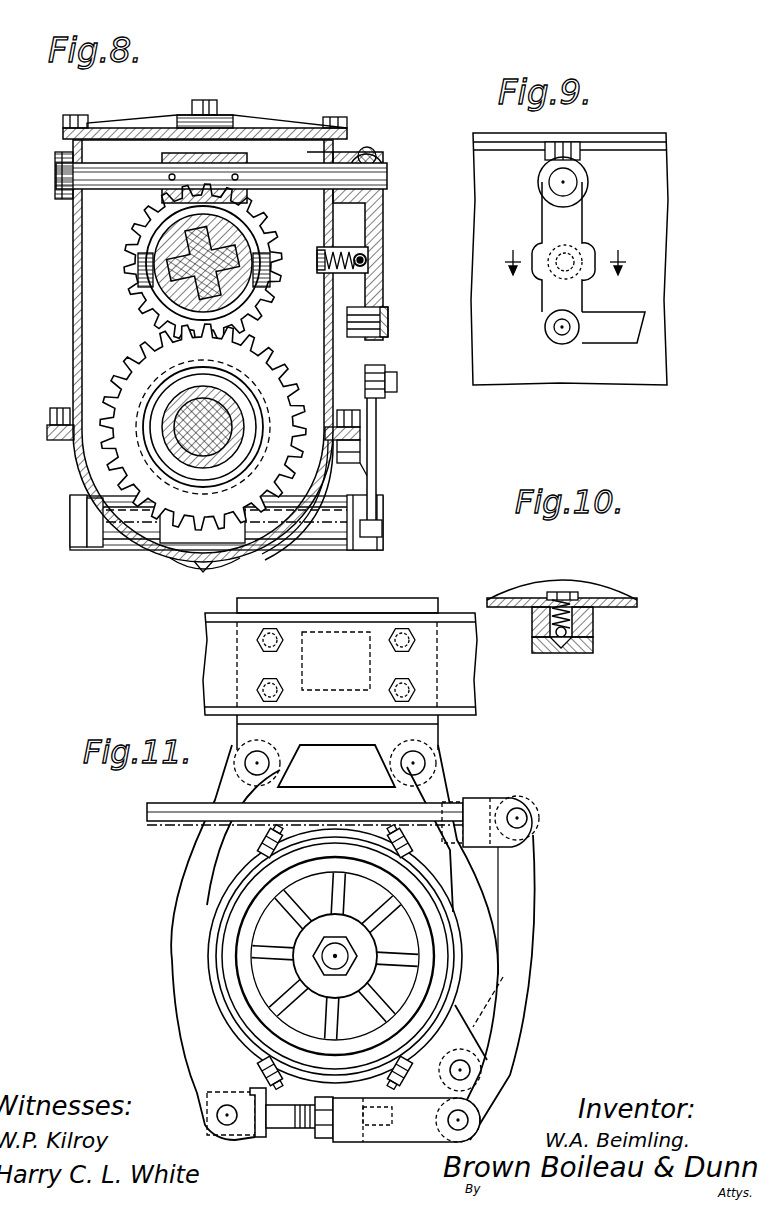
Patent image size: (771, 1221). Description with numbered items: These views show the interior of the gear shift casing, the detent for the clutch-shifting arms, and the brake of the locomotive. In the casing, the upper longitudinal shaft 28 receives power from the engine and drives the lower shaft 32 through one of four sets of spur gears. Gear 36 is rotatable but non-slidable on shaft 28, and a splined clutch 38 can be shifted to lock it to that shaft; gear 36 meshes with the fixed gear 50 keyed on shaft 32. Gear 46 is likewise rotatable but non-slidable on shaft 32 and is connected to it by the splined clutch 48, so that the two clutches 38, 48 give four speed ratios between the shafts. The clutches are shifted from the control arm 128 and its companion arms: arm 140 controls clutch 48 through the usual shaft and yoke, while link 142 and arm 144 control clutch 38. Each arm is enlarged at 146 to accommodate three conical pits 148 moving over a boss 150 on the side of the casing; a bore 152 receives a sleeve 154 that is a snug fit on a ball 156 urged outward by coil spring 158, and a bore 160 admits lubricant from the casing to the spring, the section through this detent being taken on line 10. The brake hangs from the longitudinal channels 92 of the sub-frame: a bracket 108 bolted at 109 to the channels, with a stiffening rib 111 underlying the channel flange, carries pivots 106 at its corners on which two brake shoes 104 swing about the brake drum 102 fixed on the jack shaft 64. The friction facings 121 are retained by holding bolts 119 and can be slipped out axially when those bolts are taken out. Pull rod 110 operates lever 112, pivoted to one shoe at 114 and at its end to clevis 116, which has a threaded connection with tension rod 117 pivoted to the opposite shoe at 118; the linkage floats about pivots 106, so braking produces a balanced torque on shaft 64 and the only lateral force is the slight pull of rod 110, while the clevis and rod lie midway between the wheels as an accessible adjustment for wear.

In FIG. 8, the upper longitudinal shaft 28 is at (205, 263).
In FIG. 8, the gear 36 is at (274, 250).
In FIG. 8, the splined clutch 38 is at (272, 289).
In FIG. 8, the splined clutch 48 is at (203, 427).
In FIG. 8, the fixed gear 50 is at (254, 354).
In FIG. 8, the gear 46 is at (203, 427).
In FIG. 8, the lower shaft 32 is at (196, 437).
In FIG. 8, the arm 140 is at (375, 487).
In FIG. 8, the control arm 128 is at (398, 383).
In FIG. 8, the link 142 is at (385, 312).
In FIG. 9, the link 142 is at (612, 316).
In FIG. 8, the arm 144 is at (372, 276).
In FIG. 9, the enlargement 146 is at (585, 257).
In FIG. 8, the conical pits 148 is at (367, 261).
In FIG. 9, the conical pits 148 is at (553, 272).
In FIG. 10, the conical pits 148 is at (552, 653).
In FIG. 10, the boss 150 is at (594, 624).
In FIG. 10, the bore 152 is at (587, 602).
In FIG. 10, the sleeve 154 is at (576, 598).
In FIG. 8, the ball 156 is at (362, 256).
In FIG. 9, the ball 156 is at (570, 248).
In FIG. 10, the ball 156 is at (575, 650).
In FIG. 8, the coil spring 158 is at (357, 266).
In FIG. 10, the coil spring 158 is at (532, 626).
In FIG. 8, the bore 160 is at (322, 259).
In FIG. 10, the bore 160 is at (560, 592).
In FIG. 9, the section line 10 is at (567, 262).
In FIG. 11, the channels 92 is at (205, 675).
In FIG. 11, the bracket 108 is at (321, 734).
In FIG. 11, the bolts 109 is at (272, 652).
In FIG. 11, the stiffening rib 111 is at (340, 725).
In FIG. 11, the pivots 106 is at (257, 763).
In FIG. 11, the pull rod 110 is at (180, 813).
In FIG. 11, the brake drum 102 is at (347, 856).
In FIG. 11, the brake shoes 104 is at (213, 917).
In FIG. 11, the friction facings 121 is at (218, 985).
In FIG. 11, the jack shaft 64 is at (340, 958).
In FIG. 11, the holding bolts 119 is at (272, 836).
In FIG. 11, the lever 112 is at (521, 962).
In FIG. 11, the pivot 114 is at (464, 1070).
In FIG. 11, the clevis 116 is at (413, 1125).
In FIG. 11, the tension rod 117 is at (290, 1130).
In FIG. 11, the pivot 118 is at (231, 1118).